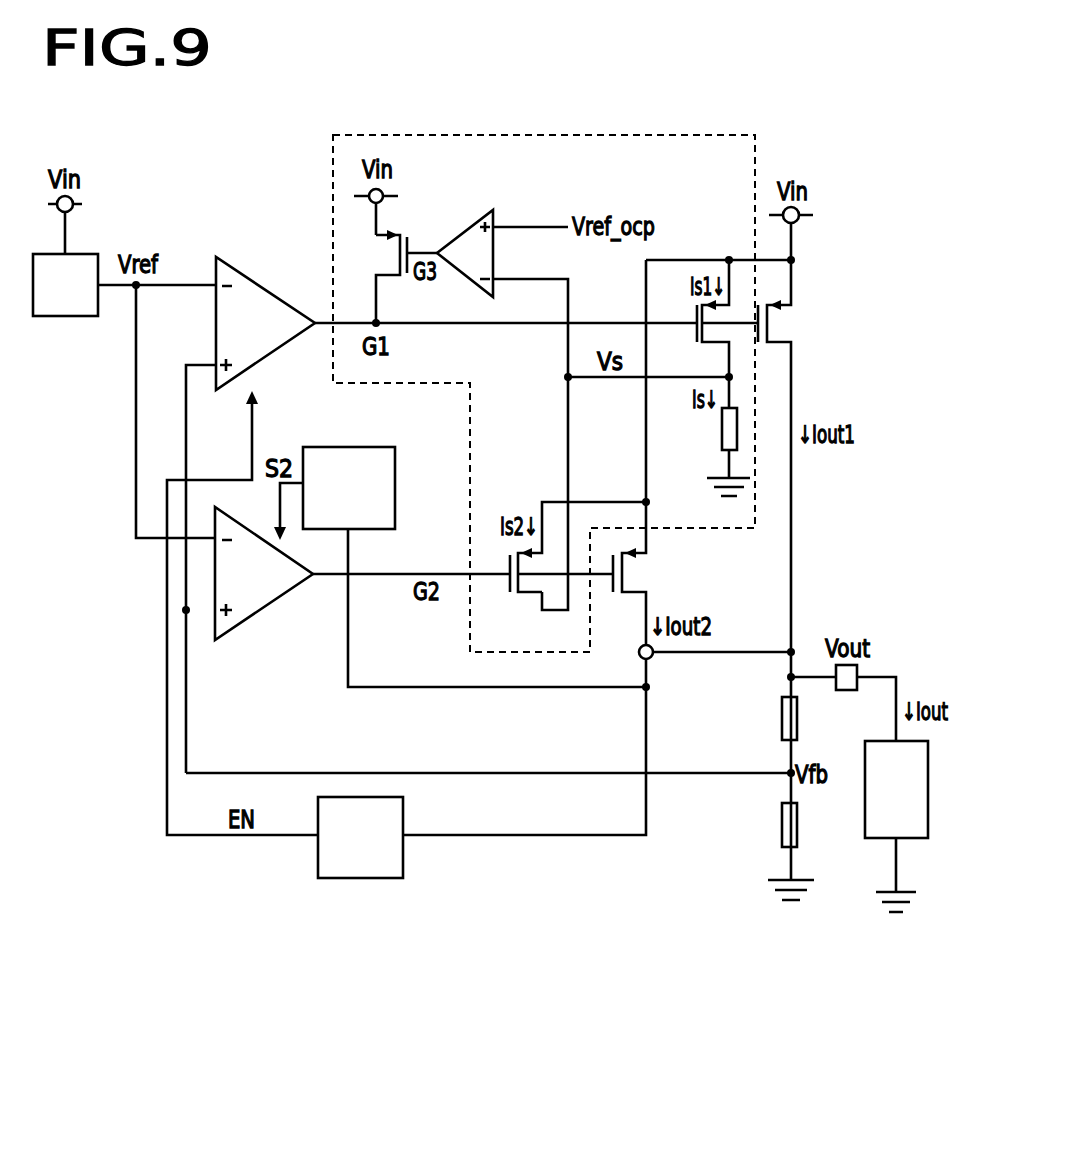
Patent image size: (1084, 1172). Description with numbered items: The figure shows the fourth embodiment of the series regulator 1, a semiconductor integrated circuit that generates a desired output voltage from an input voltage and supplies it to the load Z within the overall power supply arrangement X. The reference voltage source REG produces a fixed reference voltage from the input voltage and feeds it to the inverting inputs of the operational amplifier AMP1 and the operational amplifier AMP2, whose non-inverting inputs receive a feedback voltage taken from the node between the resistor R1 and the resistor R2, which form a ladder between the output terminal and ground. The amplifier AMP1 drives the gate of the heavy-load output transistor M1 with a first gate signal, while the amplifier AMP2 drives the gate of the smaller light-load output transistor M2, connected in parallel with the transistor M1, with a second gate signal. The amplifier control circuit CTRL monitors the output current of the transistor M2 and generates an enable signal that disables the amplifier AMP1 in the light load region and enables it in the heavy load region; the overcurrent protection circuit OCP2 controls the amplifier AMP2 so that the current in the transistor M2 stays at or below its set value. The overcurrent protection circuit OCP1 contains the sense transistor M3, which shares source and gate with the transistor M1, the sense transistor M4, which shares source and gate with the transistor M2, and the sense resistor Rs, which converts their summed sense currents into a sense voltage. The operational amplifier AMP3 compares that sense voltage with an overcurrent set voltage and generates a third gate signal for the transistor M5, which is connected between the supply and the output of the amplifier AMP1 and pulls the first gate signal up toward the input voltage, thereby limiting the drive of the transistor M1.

The series regulator 1 is at (861, 953).
The power supply device X is at (887, 165).
The transistor M1 is at (795, 456).
The transistor M2 is at (650, 573).
The transistor M3 is at (696, 334).
The transistor M4 is at (511, 597).
The transistor M5 is at (388, 276).
The resistor R1 is at (808, 718).
The resistor R2 is at (808, 825).
The sense resistor Rs is at (716, 436).
The load Z is at (896, 826).
The operational amplifier AMP1 is at (265, 323).
The operational amplifier AMP2 is at (264, 573).
The operational amplifier AMP3 is at (467, 228).
The overcurrent protection circuit OCP1 is at (544, 136).
The overcurrent protection circuit OCP2 is at (349, 488).
The amplifier control circuit CTRL is at (360, 837).
The reference voltage source REG is at (65, 285).